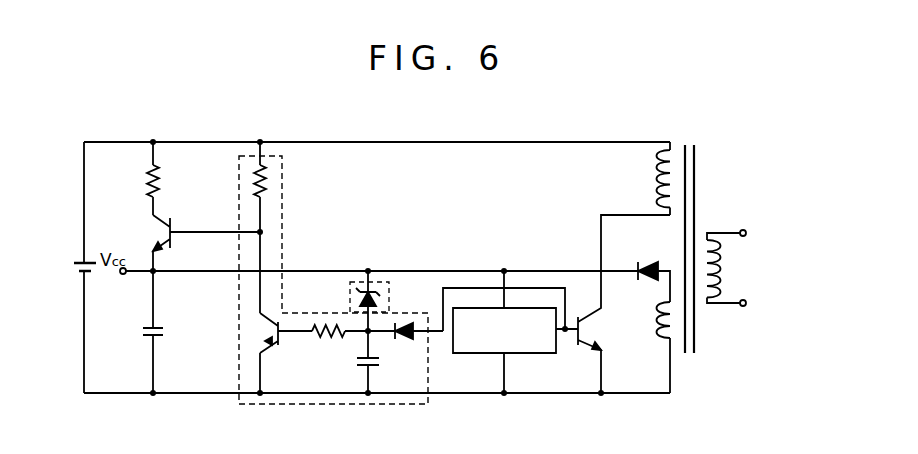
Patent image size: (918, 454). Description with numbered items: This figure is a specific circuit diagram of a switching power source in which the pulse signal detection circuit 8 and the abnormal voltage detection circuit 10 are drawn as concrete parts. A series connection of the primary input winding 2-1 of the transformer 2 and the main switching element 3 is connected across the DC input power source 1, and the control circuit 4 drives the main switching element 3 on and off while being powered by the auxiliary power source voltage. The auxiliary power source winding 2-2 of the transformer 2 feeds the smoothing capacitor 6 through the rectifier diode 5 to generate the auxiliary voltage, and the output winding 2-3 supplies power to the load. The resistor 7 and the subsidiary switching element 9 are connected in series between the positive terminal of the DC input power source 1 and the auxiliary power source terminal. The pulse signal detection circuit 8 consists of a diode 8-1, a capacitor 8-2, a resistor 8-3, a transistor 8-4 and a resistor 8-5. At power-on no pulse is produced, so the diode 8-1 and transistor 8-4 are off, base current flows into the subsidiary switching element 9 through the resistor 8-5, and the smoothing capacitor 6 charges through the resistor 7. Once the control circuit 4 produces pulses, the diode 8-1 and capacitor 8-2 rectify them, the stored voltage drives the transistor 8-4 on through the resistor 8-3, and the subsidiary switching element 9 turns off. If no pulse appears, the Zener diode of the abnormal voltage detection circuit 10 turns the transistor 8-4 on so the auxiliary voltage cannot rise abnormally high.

The DC input power source 1 is at (81, 270).
The transformer 2 is at (688, 142).
The primary input winding 2-1 is at (677, 140).
The auxiliary power source winding 2-2 is at (672, 350).
The output winding 2-3 is at (712, 305).
The main switching element 3 is at (603, 331).
The control circuit 4 is at (548, 354).
The rectifier diode 5 is at (654, 261).
The smoothing capacitor 6 is at (165, 332).
The resistor 7 is at (161, 182).
The pulse signal detection circuit 8 is at (348, 404).
The diode 8-1 is at (402, 341).
The capacitor 8-2 is at (357, 363).
The resistor 8-3 is at (322, 320).
The transistor 8-4 is at (267, 330).
The resistor 8-5 is at (267, 180).
The subsidiary switching element 9 is at (175, 222).
The abnormal voltage detection circuit 10 is at (389, 292).